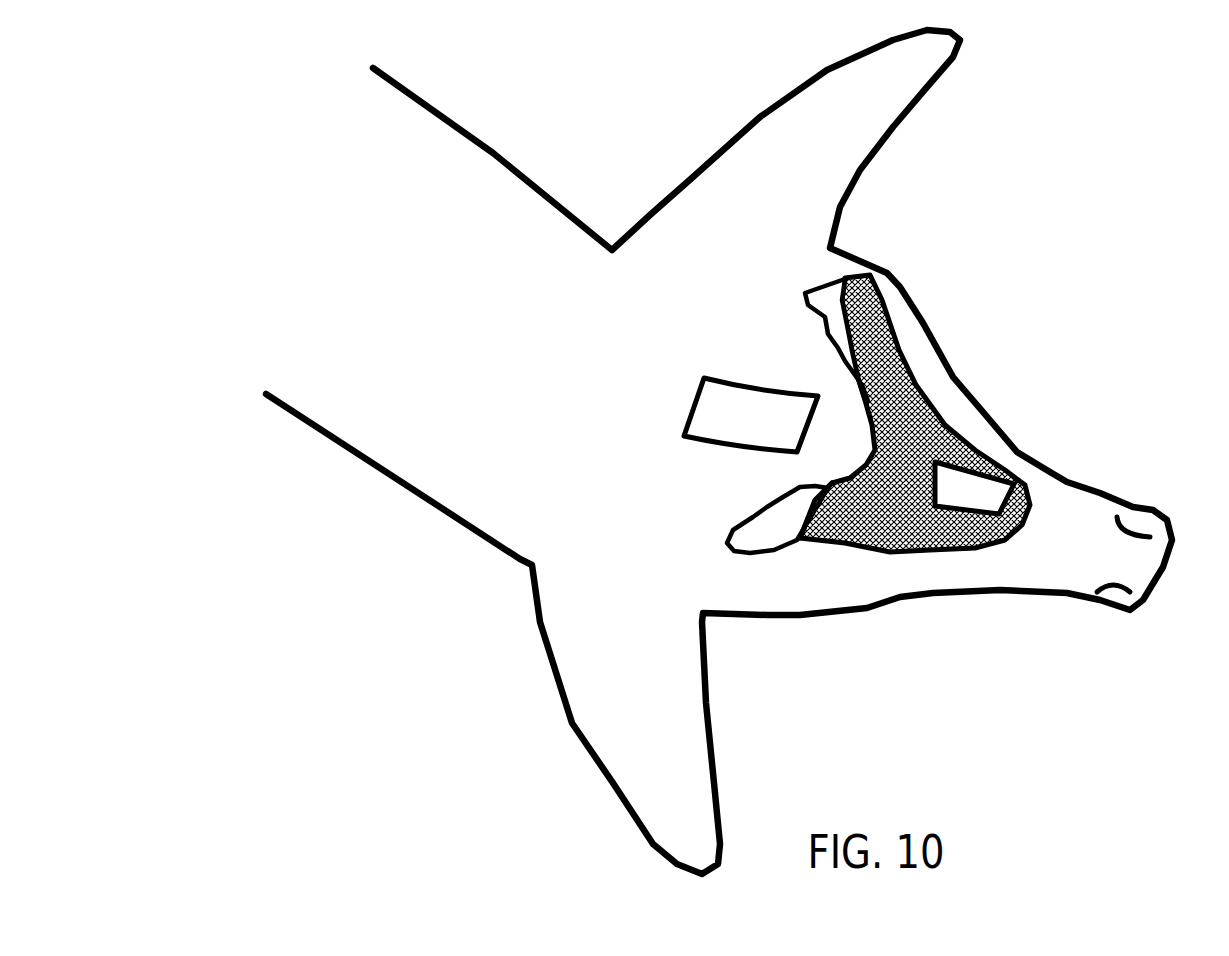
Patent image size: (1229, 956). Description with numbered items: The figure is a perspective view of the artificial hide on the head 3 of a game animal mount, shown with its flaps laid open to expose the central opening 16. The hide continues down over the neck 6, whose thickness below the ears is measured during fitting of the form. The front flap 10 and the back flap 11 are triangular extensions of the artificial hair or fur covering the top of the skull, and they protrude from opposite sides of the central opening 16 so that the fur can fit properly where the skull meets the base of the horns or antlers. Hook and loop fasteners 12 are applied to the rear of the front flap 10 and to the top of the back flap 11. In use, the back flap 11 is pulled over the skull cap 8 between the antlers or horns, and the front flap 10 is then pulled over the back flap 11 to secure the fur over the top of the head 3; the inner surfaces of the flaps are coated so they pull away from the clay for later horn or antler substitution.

The head 3 is at (934, 440).
The neck 6 is at (528, 158).
The skull cap 8 is at (773, 513).
The front flap 10 is at (956, 425).
The back flap 11 is at (832, 403).
The hook and loop fasteners 12 is at (735, 420).
The central opening 16 is at (750, 550).